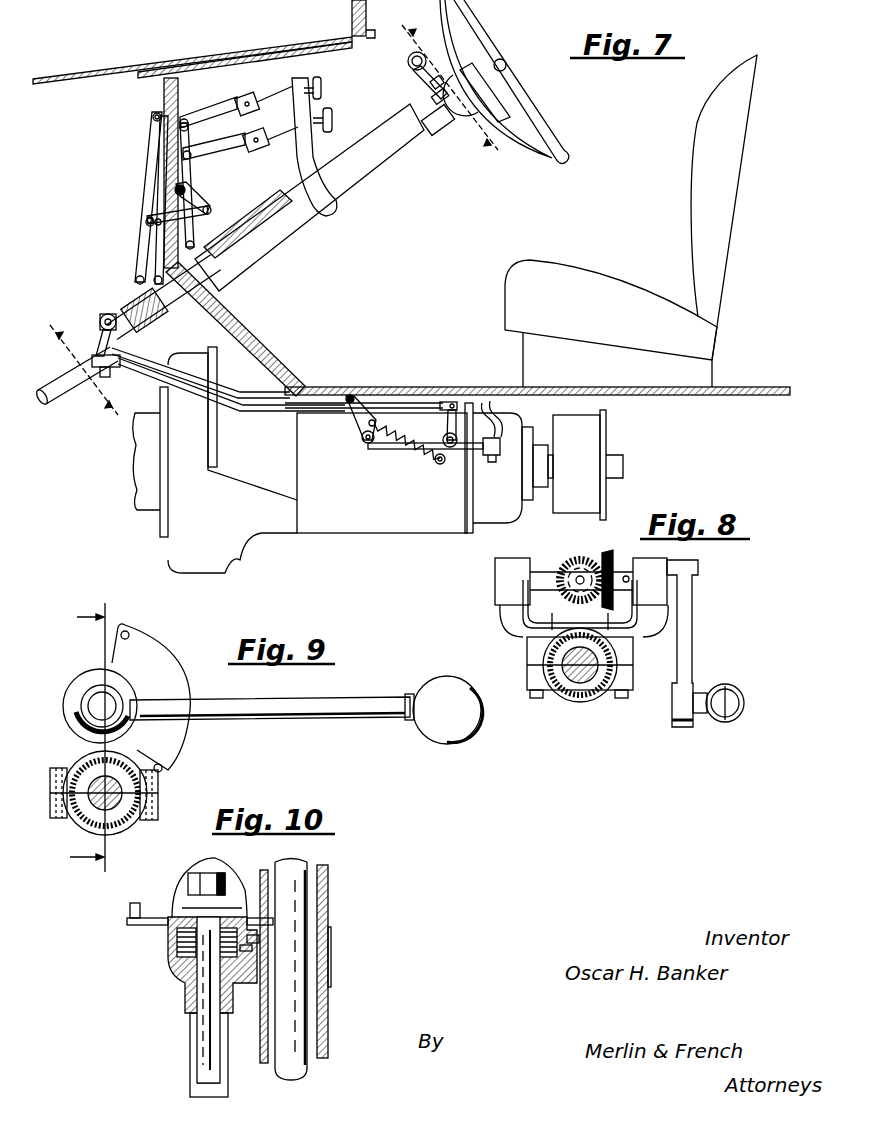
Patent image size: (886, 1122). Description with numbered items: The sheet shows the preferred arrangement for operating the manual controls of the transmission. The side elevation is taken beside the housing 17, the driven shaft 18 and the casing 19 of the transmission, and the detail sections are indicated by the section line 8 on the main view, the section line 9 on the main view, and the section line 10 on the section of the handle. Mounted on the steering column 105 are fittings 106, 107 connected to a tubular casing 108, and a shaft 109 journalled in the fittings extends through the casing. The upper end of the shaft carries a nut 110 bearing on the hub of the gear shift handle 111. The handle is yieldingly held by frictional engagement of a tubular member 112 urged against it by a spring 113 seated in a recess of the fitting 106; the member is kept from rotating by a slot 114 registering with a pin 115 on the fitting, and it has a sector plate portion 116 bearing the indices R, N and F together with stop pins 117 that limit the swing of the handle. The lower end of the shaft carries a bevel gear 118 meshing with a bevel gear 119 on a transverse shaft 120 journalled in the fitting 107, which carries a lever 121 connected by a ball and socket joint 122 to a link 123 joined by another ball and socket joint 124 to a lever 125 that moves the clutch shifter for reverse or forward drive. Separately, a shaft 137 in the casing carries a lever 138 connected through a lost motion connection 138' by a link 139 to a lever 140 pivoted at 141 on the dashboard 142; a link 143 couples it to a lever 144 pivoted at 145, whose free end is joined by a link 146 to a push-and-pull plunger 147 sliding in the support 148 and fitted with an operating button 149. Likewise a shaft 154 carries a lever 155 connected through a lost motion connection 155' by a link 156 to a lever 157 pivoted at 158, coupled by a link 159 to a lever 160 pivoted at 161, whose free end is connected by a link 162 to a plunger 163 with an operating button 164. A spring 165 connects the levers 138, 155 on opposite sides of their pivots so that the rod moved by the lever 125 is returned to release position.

In FIG. 7, the section line 8— 8 is at (68, 385).
In FIG. 7, the section line 9— 9 is at (457, 79).
In FIG. 9, the section line 10— 10 is at (76, 737).
In FIG. 7, the housing 17 is at (222, 535).
In FIG. 7, the driven shaft 18 is at (612, 470).
In FIG. 7, the casing 19 is at (380, 515).
In FIG. 7, the steering column 105 is at (360, 195).
In FIG. 8, the steering column 105 is at (575, 702).
In FIG. 9, the steering column 105 is at (122, 830).
In FIG. 10, the steering column 105 is at (328, 1010).
In FIG. 7, the fitting 106 is at (445, 135).
In FIG. 9, the fitting 106 is at (150, 800).
In FIG. 10, the fitting 106 is at (182, 995).
In FIG. 7, the fitting 107 is at (140, 346).
In FIG. 8, the fitting 107 is at (518, 628).
In FIG. 7, the tubular casing 108 is at (300, 233).
In FIG. 10, the tubular casing 108 is at (190, 1050).
In FIG. 7, the shaft 109 is at (262, 240).
In FIG. 8, the shaft 109 is at (578, 565).
In FIG. 10, the shaft 109 is at (207, 1062).
In FIG. 7, the nut 110 is at (432, 135).
In FIG. 9, the nut 110 is at (95, 705).
In FIG. 10, the nut 110 is at (222, 875).
In FIG. 7, the gear shift handle 111 is at (410, 68).
In FIG. 9, the gear shift handle 111 is at (343, 702).
In FIG. 10, the gear shift handle 111 is at (185, 905).
In FIG. 10, the tubular member 112 is at (177, 945).
In FIG. 10, the spring 113 is at (170, 962).
In FIG. 10, the slot 114 is at (255, 948).
In FIG. 10, the pin 115 is at (262, 938).
In FIG. 7, the sector plate portion 116 is at (430, 85).
In FIG. 9, the sector plate portion 116 is at (170, 678).
In FIG. 10, the sector plate portion 116 is at (137, 925).
In FIG. 9, the stop pins 117 is at (130, 632).
In FIG. 10, the stop pins 117 is at (128, 912).
In FIG. 7, the bevel gear 118 is at (108, 313).
In FIG. 8, the bevel gear 118 is at (580, 555).
In FIG. 7, the bevel gear 119 is at (101, 317).
In FIG. 8, the bevel gear 119 is at (606, 556).
In FIG. 7, the transverse shaft 120 is at (99, 324).
In FIG. 8, the transverse shaft 120 is at (540, 572).
In FIG. 7, the lever 121 is at (98, 340).
In FIG. 8, the lever 121 is at (688, 650).
In FIG. 7, the ball and socket joint 122 is at (112, 370).
In FIG. 8, the ball and socket joint 122 is at (735, 686).
In FIG. 7, the link 123 is at (210, 400).
In FIG. 7, the ball and socket joint 124 is at (492, 458).
In FIG. 7, the lever 125 is at (508, 432).
In FIG. 7, the shaft 137 is at (372, 449).
In FIG. 7, the lever 138 is at (346, 419).
In FIG. 7, the lost motion connection 138' is at (361, 381).
In FIG. 7, the link 139 is at (232, 415).
In FIG. 7, the lever 140 is at (142, 238).
In FIG. 7, the pivotal mounting 141 is at (153, 115).
In FIG. 7, the dashboard 142 is at (166, 93).
In FIG. 7, the link 143 is at (147, 218).
In FIG. 7, the lever 144 is at (192, 172).
In FIG. 7, the pivotal mounting 145 is at (200, 222).
In FIG. 7, the link 146 is at (228, 145).
In FIG. 7, the push-and-pull plunger 147 is at (265, 127).
In FIG. 7, the support 148 is at (300, 72).
In FIG. 7, the operating button 149 is at (332, 120).
In FIG. 7, the shaft 154 is at (446, 468).
In FIG. 7, the lever 155 is at (435, 428).
In FIG. 7, the lost motion connection 155' is at (471, 386).
In FIG. 7, the link 156 is at (410, 403).
In FIG. 7, the lever 157 is at (156, 250).
In FIG. 7, the pivotal mounting 158 is at (152, 124).
In FIG. 7, the link 159 is at (150, 227).
In FIG. 7, the lever 160 is at (200, 200).
In FIG. 7, the pivotal mounting 161 is at (176, 190).
In FIG. 7, the link 162 is at (205, 113).
In FIG. 7, the plunger 163 is at (272, 93).
In FIG. 7, the operating button 164 is at (322, 92).
In FIG. 7, the spring 165 is at (400, 432).